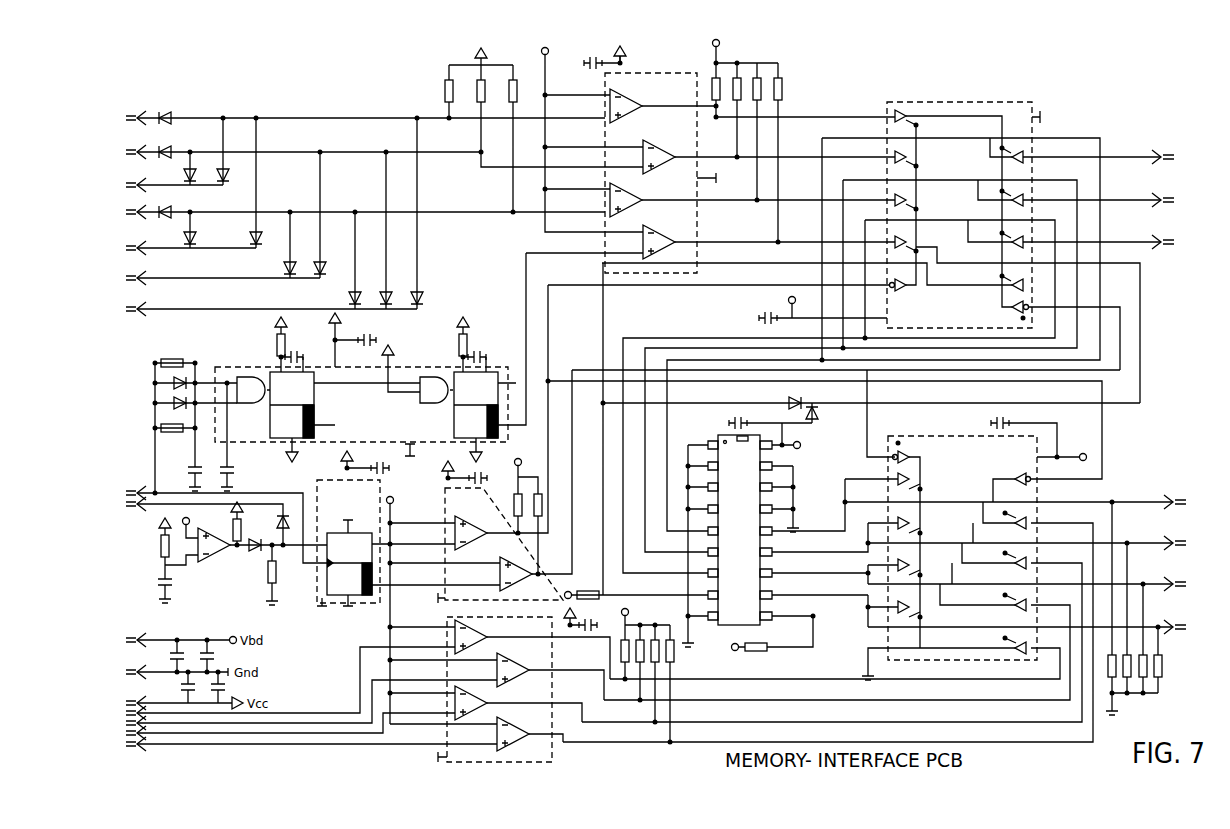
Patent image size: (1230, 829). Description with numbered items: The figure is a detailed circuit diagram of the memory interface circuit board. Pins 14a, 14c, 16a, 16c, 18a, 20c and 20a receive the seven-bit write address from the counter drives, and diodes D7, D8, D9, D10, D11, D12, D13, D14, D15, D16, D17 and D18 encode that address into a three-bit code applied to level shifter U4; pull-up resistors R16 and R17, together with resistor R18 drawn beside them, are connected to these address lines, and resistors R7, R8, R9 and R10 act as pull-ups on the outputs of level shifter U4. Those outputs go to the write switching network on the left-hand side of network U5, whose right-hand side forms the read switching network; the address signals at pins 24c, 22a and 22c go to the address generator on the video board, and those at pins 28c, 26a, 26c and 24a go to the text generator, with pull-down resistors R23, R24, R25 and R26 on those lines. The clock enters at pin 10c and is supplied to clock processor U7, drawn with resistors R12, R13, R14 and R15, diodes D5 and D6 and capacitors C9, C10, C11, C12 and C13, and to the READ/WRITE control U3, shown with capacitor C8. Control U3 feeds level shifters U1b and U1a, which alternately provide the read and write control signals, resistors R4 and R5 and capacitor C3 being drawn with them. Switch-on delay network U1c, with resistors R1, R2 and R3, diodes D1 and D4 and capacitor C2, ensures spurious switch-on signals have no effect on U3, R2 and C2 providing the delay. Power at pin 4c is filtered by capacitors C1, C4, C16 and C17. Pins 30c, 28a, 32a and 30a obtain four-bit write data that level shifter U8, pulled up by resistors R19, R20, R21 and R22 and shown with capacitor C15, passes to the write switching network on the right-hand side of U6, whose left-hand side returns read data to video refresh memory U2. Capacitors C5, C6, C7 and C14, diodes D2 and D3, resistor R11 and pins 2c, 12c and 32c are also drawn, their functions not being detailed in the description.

The pin 14a is at (122, 118).
The pin 14c is at (122, 152).
The pin 16a is at (122, 185).
The pin 16c is at (122, 212).
The pin 18a is at (122, 248).
The pin 20c is at (122, 278).
The pin 20a is at (122, 309).
The clock input pin 10c is at (121, 493).
The connector pin 12c is at (121, 505).
The connector pin 2c is at (129, 640).
The write data pin 32a is at (125, 672).
The power supply pin 4c is at (129, 703).
The write data pin 30c is at (118, 713).
The write data pin 28a is at (128, 723).
The connector pin 32c is at (118, 734).
The write data pin 30a is at (128, 744).
The address output pin 22c is at (1176, 158).
The address output pin 22a is at (1176, 201).
The address output pin 24c is at (1176, 242).
The address output pin 28c is at (1189, 502).
The address output pin 26a is at (1189, 543).
The address output pin 26c is at (1189, 584).
The address output pin 24a is at (1189, 627).
The diode D1 is at (257, 553).
The diode D2 is at (788, 396).
The diode D3 is at (822, 417).
The diode D4 is at (273, 519).
The diode D5 is at (171, 398).
The diode D6 is at (171, 377).
The encoding diode D7 is at (166, 124).
The encoding diode D8 is at (231, 173).
The encoding diode D9 is at (331, 266).
The encoding diode D10 is at (431, 296).
The encoding diode D11 is at (165, 158).
The encoding diode D12 is at (198, 169).
The encoding diode D13 is at (268, 236).
The encoding diode D14 is at (162, 223).
The encoding diode D15 is at (205, 236).
The encoding diode D16 is at (276, 266).
The encoding diode D17 is at (392, 288).
The encoding diode D18 is at (341, 296).
The resistor R1 is at (246, 530).
The time delay resistor R2 is at (157, 546).
The resistor R3 is at (281, 572).
The resistor R4 is at (510, 500).
The resistor R5 is at (551, 505).
The pull-up resistor R7 is at (787, 89).
The pull-up resistor R8 is at (708, 89).
The pull-up resistor R9 is at (659, 338).
The pull-up resistor R10 is at (755, 71).
The resistor R11 is at (757, 653).
The resistor R12 is at (268, 345).
The resistor R13 is at (170, 436).
The resistor R14 is at (172, 356).
The resistor R15 is at (449, 345).
The pull-up resistor R16 is at (461, 91).
The pull-up resistor R17 is at (525, 91).
The resistor R18 is at (493, 91).
The pull-up resistor R19 is at (683, 651).
The pull-up resistor R20 is at (644, 679).
The pull-up resistor R21 is at (611, 651).
The pull-up resistor R22 is at (630, 668).
The pull-down resistor R23 is at (1129, 652).
The pull-down resistor R24 is at (1113, 652).
The pull-down resistor R25 is at (1168, 663).
The pull-down resistor R26 is at (1145, 652).
The filter capacitor C1 is at (226, 687).
The time delay capacitor C2 is at (173, 582).
The capacitor C3 is at (476, 471).
The filter capacitor C4 is at (215, 656).
The capacitor C5 is at (738, 416).
The capacitor C6 is at (769, 310).
The capacitor C7 is at (999, 415).
The capacitor C8 is at (377, 461).
The capacitor C9 is at (364, 333).
The capacitor C10 is at (299, 350).
The capacitor C11 is at (185, 469).
The capacitor C12 is at (240, 470).
The capacitor C13 is at (482, 351).
The capacitor C14 is at (589, 57).
The capacitor C15 is at (589, 618).
The filter capacitor C16 is at (177, 687).
The filter capacitor C17 is at (166, 656).
The level shifter U1a is at (493, 568).
The level shifter U1b is at (474, 540).
The switch on delay network U1c is at (208, 544).
The video refresh memory U2 is at (734, 527).
The READ/WRITE control U3 is at (346, 541).
The level shifter U4 is at (650, 160).
The switching network U5 is at (968, 219).
The write switching network U6 is at (951, 547).
The clock processor U7 is at (360, 405).
The level shifter U8 is at (492, 693).